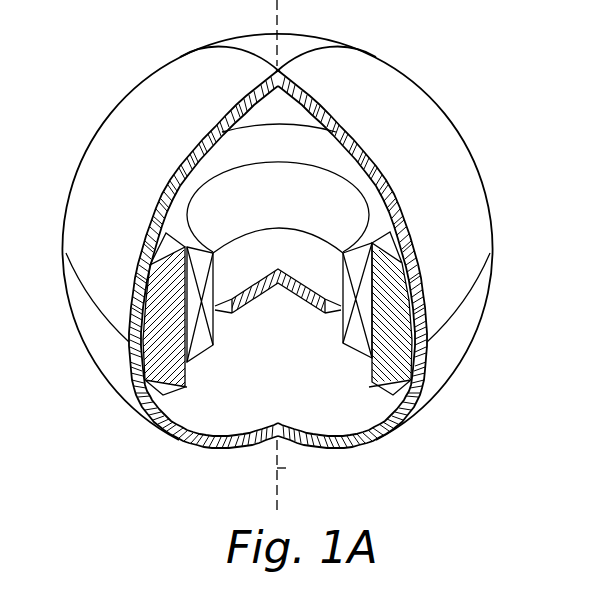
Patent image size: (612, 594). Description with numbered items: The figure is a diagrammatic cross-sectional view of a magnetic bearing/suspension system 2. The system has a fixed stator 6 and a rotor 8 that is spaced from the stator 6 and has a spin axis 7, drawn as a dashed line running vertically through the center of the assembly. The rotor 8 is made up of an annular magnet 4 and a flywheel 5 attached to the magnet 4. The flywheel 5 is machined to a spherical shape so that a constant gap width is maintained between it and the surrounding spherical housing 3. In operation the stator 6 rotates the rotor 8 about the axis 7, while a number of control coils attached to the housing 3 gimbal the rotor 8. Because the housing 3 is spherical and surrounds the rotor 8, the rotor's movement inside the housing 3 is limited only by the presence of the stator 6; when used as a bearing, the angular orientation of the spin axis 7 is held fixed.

The magnetic bearing/suspension system 2 is at (130, 47).
The spherical housing 3 is at (455, 152).
The annular magnet 4 is at (204, 342).
The flywheel 5 is at (180, 388).
The stator 6 is at (288, 255).
The spin axis 7 is at (288, 468).
The rotor 8 is at (250, 363).